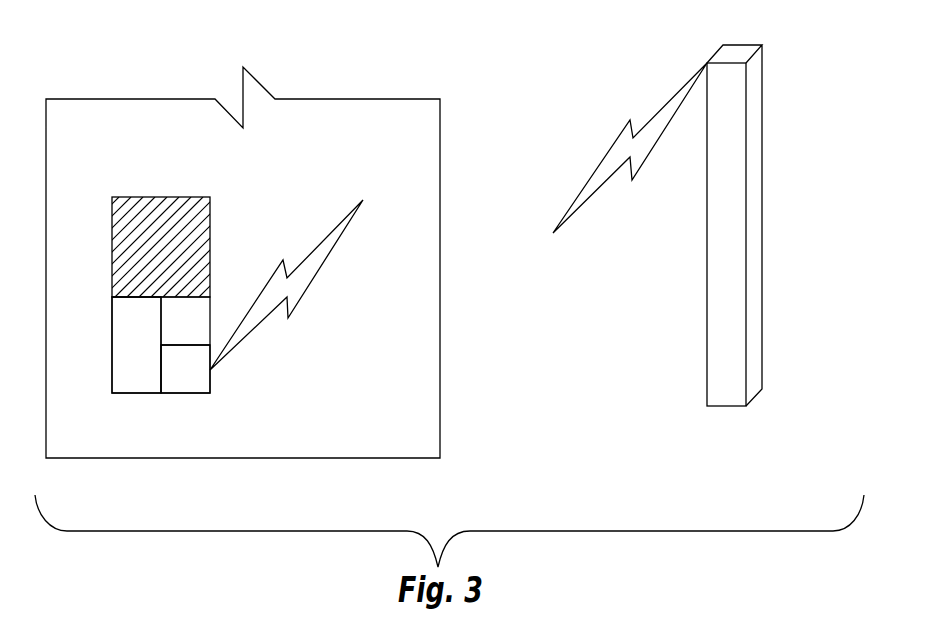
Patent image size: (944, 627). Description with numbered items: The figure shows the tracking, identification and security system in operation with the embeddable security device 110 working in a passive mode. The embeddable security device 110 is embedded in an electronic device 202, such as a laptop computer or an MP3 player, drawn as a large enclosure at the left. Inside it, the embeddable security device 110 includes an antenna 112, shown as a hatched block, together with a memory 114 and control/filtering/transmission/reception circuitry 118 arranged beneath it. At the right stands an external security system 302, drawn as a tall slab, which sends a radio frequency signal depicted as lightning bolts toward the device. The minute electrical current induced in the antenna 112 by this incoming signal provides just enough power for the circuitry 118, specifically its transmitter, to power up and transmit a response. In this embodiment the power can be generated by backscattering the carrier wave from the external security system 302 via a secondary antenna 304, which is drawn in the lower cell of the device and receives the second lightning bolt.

The embeddable security device 110 is at (243, 223).
The antenna 112 is at (157, 197).
The memory 114 is at (211, 318).
The control/filtering/transmission/reception circuitry 118 is at (137, 385).
The electronic device 202 is at (440, 180).
The external security system 302 is at (742, 44).
The secondary antenna 304 is at (183, 368).